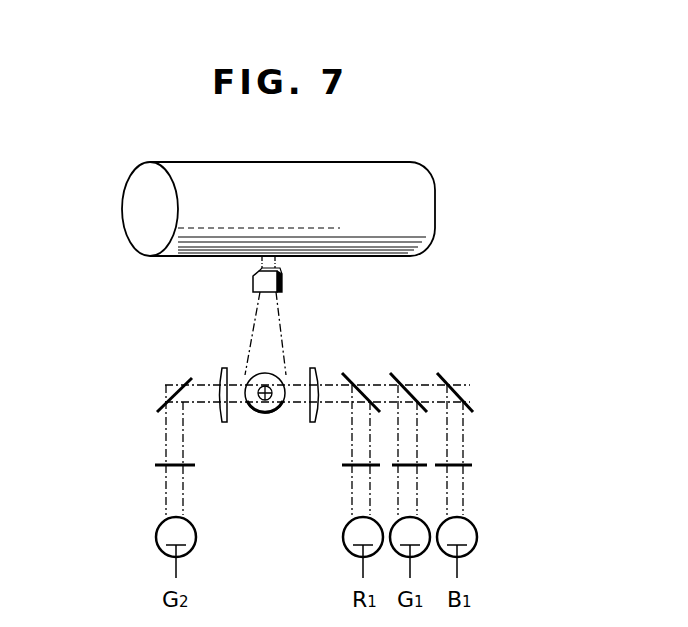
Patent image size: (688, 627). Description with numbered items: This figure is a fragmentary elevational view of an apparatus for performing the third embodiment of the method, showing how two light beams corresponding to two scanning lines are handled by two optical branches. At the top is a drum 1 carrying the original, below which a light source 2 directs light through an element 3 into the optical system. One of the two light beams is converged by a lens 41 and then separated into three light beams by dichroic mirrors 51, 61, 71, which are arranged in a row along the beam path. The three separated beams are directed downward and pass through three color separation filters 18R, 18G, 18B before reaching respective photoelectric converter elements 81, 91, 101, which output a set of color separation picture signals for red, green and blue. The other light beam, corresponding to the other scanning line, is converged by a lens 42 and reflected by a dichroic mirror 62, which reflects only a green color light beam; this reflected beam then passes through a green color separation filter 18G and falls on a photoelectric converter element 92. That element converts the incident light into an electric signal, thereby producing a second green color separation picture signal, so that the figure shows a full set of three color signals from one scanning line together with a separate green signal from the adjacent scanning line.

The drum 1 is at (346, 255).
The light source 2 is at (253, 283).
The condenser 3 is at (262, 426).
The lens 41 is at (318, 374).
The lens 42 is at (223, 420).
The dichroic mirror 51 is at (350, 378).
The dichroic mirror 61 is at (397, 378).
The dichroic mirror 62 is at (184, 378).
The dichroic mirror 71 is at (445, 378).
The photoelectric converter element 81 is at (344, 541).
The photoelectric converter element 91 is at (398, 551).
The photoelectric converter element 92 is at (156, 538).
The photoelectric converter element 101 is at (471, 547).
The red color separation filter 18R is at (347, 467).
The green color separation filter 18G is at (160, 467).
The blue color separation filter 18B is at (473, 467).